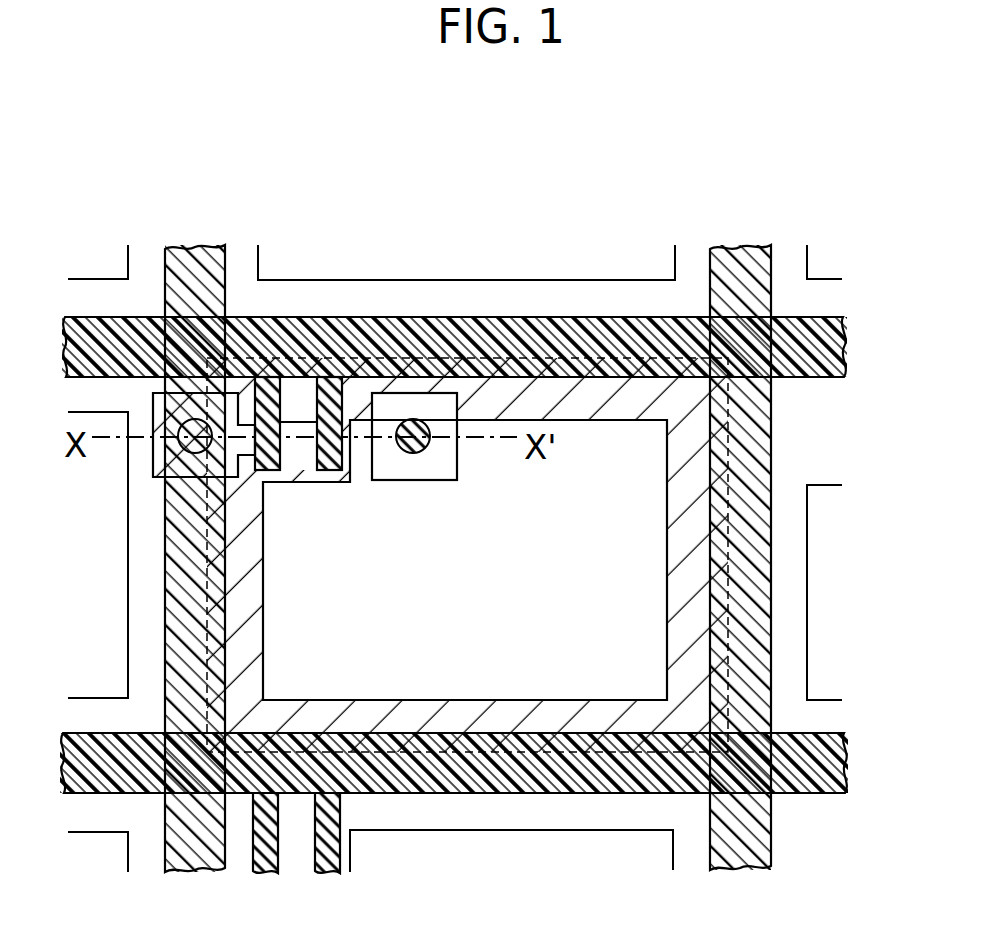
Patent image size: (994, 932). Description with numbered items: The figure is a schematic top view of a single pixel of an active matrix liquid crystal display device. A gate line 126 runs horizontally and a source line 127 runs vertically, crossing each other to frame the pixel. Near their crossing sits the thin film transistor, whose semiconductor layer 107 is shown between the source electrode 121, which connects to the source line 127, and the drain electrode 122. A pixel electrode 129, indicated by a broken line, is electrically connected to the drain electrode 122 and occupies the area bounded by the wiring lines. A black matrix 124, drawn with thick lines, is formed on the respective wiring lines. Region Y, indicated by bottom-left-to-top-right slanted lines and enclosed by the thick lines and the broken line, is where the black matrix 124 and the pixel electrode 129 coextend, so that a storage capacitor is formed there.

The semiconductor layer 107 is at (300, 443).
The source electrode 121 is at (185, 446).
The drain electrode 122 is at (422, 426).
The black matrix 124 is at (358, 279).
The gate line 126 is at (827, 340).
The source line 127 is at (203, 843).
The pixel electrode 129 is at (207, 542).
The storage capacitor region Y is at (412, 717).